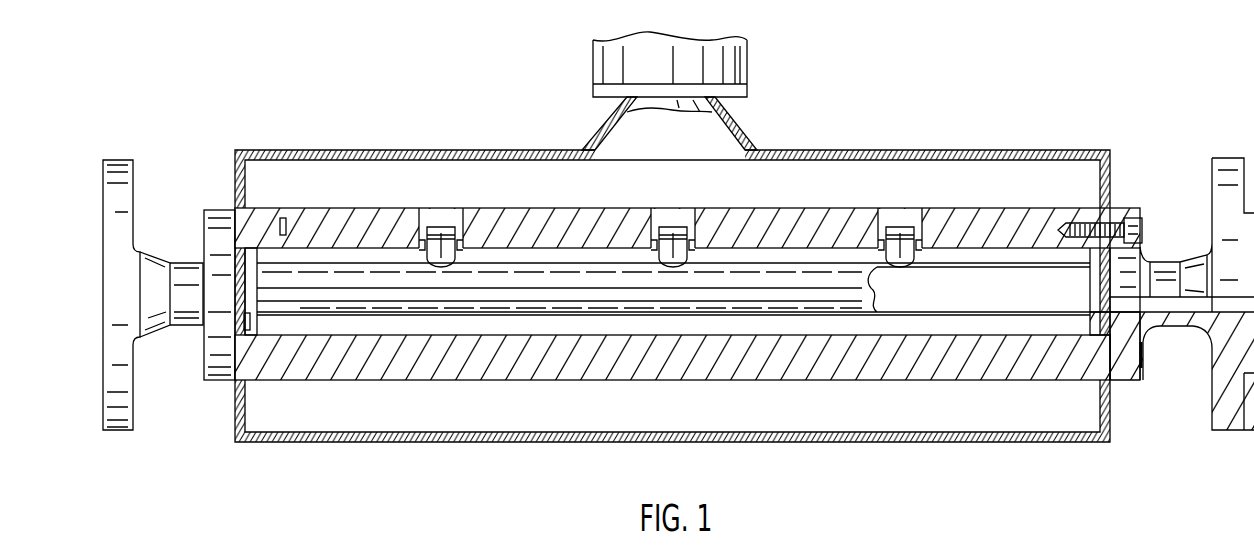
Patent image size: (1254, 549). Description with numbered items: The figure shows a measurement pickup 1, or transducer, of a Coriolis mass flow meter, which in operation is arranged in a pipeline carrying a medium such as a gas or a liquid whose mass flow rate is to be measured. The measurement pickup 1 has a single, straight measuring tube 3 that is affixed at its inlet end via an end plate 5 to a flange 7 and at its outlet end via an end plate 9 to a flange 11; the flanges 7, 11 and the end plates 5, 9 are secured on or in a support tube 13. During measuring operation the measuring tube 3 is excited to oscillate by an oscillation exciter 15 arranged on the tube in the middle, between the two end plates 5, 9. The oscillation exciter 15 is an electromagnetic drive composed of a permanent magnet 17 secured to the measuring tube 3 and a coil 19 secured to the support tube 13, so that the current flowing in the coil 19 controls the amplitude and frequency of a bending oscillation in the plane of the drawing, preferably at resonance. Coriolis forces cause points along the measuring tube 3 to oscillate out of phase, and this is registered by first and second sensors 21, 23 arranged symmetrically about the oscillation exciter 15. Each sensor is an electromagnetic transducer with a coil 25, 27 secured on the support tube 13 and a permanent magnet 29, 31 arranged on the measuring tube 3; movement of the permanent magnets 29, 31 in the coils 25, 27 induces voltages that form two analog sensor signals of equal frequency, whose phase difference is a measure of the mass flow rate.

The measurement pickup 1 is at (874, 62).
The measuring tube 3 is at (380, 305).
The end plate 5 is at (243, 275).
The flange 7 is at (120, 162).
The end plate 9 is at (1100, 282).
The flange 11 is at (1237, 418).
The support tube 13 is at (460, 372).
The oscillation exciter 15 is at (673, 210).
The permanent magnet 17 is at (685, 247).
The coil 19 is at (667, 233).
The first sensor 21 is at (442, 210).
The second sensor 23 is at (902, 212).
The coil 25 is at (433, 233).
The coil 27 is at (893, 228).
The permanent magnet 29 is at (445, 247).
The permanent magnet 31 is at (912, 247).